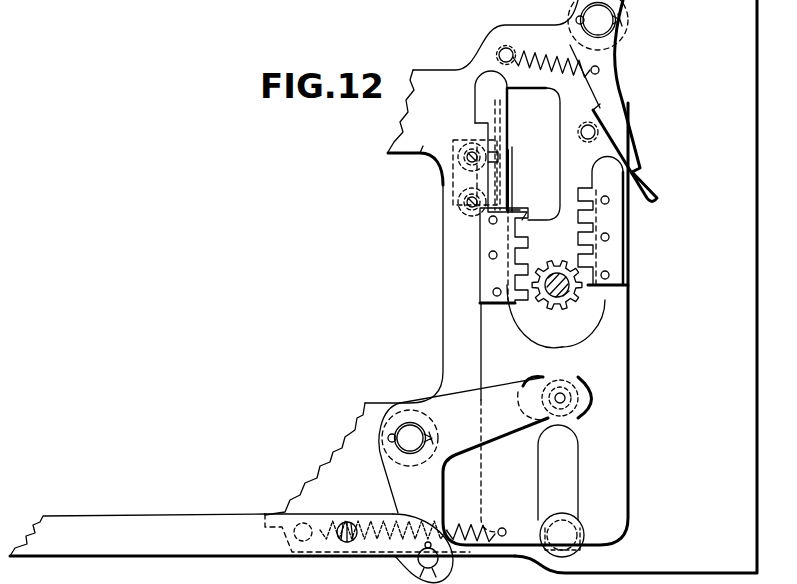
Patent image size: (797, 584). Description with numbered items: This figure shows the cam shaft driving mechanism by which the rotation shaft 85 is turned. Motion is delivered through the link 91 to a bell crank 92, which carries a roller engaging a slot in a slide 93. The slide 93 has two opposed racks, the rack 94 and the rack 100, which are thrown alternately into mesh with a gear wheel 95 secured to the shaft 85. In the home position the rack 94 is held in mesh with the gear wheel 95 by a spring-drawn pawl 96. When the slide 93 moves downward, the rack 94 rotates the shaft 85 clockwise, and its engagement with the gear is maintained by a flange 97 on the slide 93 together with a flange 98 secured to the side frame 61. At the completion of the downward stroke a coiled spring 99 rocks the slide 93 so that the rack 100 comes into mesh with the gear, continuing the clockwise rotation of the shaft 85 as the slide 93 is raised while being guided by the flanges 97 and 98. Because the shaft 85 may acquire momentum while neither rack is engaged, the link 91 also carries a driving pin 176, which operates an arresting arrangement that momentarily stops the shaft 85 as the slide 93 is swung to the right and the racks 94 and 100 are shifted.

The side frame 61 is at (420, 158).
The flange 97 is at (493, 142).
The flange 98 is at (512, 168).
The spring-drawn pawl 96 is at (618, 124).
The rack 100 is at (490, 267).
The gear wheel 95 is at (560, 262).
The rack 94 is at (610, 248).
The shaft 85 is at (563, 300).
The slide 93 is at (615, 382).
The bell crank 92 is at (398, 477).
The link 91 is at (200, 543).
The driving pin 176 is at (340, 543).
The coiled spring 99 is at (470, 546).